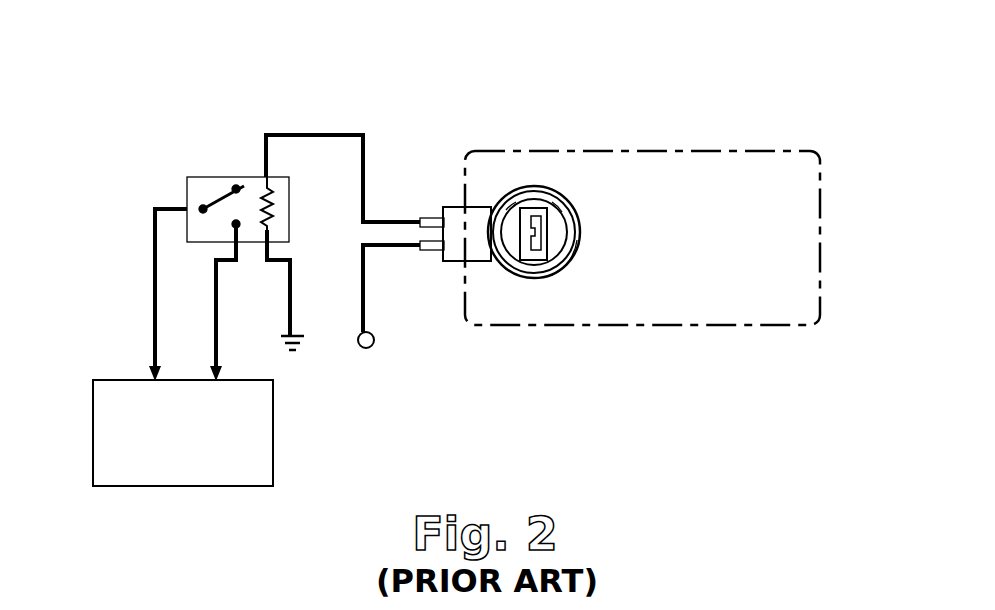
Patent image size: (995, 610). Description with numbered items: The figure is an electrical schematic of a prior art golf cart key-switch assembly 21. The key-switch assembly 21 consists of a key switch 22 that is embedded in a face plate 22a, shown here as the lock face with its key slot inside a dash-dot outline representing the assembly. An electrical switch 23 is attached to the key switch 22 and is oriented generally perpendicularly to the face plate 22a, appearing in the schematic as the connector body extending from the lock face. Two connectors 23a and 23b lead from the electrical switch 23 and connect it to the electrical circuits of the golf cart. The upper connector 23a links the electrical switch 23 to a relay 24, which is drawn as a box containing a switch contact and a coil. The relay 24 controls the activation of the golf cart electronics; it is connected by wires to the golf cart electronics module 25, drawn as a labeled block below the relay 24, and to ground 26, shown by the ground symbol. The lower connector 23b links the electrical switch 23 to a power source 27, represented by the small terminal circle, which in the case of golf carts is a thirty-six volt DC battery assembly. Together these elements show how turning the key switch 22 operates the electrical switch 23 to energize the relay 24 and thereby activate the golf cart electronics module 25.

The golf cart key-switch assembly 21 is at (721, 121).
The key switch 22 is at (550, 242).
The face plate 22a is at (605, 232).
The electrical switch 23 is at (478, 207).
The connector 23a is at (430, 218).
The connector 23b is at (430, 250).
The relay 24 is at (206, 166).
The golf cart electronics module 25 is at (288, 452).
The ground 26 is at (292, 357).
The power source 27 is at (369, 348).